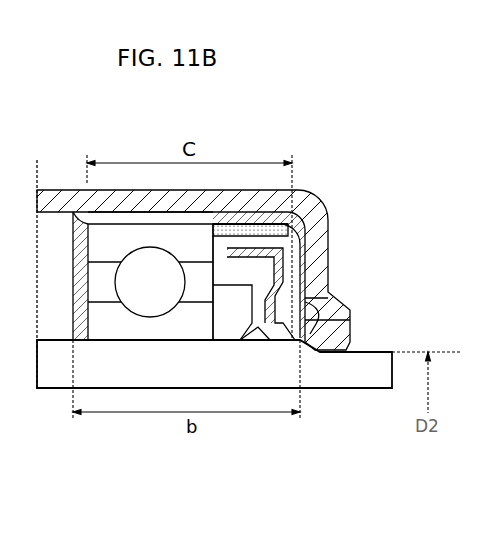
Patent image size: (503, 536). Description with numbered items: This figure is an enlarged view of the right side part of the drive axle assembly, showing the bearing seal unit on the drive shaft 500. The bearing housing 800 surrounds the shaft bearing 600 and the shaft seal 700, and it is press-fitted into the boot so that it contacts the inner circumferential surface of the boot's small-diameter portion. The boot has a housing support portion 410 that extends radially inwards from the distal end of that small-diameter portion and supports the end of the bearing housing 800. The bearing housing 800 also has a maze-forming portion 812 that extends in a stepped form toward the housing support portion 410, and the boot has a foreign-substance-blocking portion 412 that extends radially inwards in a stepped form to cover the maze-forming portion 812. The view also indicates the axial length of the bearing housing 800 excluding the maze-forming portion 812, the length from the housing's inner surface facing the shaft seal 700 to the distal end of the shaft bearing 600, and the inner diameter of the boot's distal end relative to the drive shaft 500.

The bearing housing 800 is at (320, 204).
The housing support portion 410 is at (325, 223).
The foreign-substance-blocking portion 412 is at (350, 330).
The drive shaft 500 is at (370, 370).
The shaft bearing 600 is at (123, 323).
The shaft seal 700 is at (253, 340).
The maze-forming portion 812 is at (315, 348).